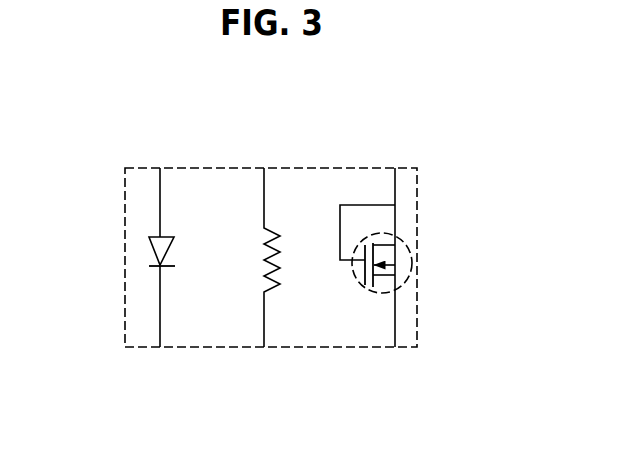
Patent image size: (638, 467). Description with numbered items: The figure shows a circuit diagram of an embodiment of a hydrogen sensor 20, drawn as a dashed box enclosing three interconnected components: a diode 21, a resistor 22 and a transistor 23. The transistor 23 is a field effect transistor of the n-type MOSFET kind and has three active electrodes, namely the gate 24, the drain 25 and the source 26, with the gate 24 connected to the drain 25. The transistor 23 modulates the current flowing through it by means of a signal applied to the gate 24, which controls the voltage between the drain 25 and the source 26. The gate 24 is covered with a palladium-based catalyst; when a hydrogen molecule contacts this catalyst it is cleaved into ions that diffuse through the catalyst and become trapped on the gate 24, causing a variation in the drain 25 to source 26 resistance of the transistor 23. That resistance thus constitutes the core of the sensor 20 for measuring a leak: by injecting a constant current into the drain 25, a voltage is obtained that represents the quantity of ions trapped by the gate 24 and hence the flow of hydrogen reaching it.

The hydrogen sensor 20 is at (332, 167).
The diode 21 is at (161, 212).
The resistor 22 is at (265, 192).
The transistor 23 is at (398, 289).
The gate 24 is at (365, 260).
The drain 25 is at (383, 245).
The source 26 is at (385, 275).